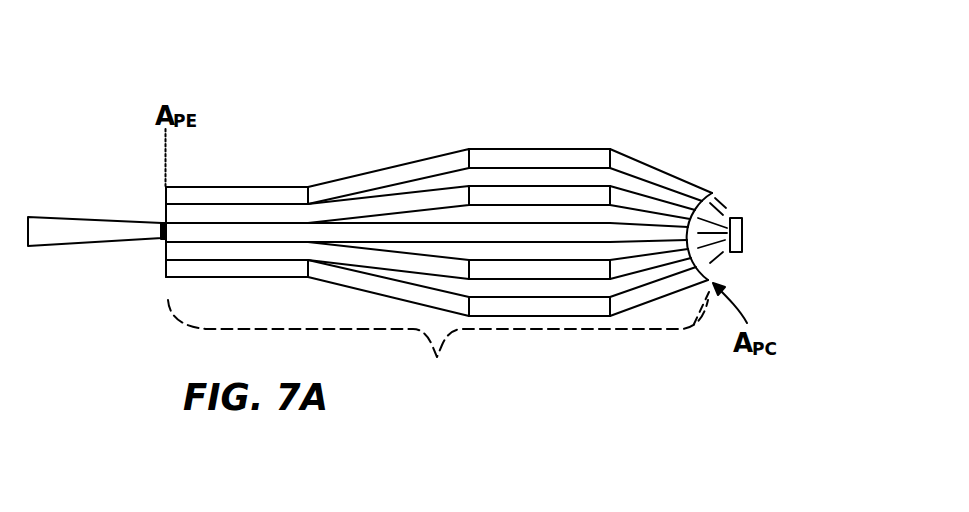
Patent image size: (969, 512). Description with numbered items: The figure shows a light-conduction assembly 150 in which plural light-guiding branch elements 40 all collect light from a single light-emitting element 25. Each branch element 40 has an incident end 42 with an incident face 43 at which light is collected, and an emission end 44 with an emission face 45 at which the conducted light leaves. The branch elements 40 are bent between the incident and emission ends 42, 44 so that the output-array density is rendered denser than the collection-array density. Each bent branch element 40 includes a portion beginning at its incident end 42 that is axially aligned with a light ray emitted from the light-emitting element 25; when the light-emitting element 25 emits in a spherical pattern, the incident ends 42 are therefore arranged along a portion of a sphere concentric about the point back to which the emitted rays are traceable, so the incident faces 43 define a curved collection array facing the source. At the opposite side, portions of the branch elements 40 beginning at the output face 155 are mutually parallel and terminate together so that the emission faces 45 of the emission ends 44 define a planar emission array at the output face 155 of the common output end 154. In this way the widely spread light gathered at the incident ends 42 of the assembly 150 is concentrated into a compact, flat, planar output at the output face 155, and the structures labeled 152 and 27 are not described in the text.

The emission face 45 is at (165, 213).
The output face 155 is at (165, 196).
The common output end 154 is at (168, 188).
The emission end 44 is at (178, 192).
The light-guiding branch element 40 is at (442, 198).
The incident end 42 is at (697, 197).
The incident face 43 is at (701, 194).
The distal exit face 152 is at (707, 281).
The target element 27 is at (726, 216).
The light-emitting element 25 is at (743, 233).
The light-conduction assembly 150 is at (437, 310).